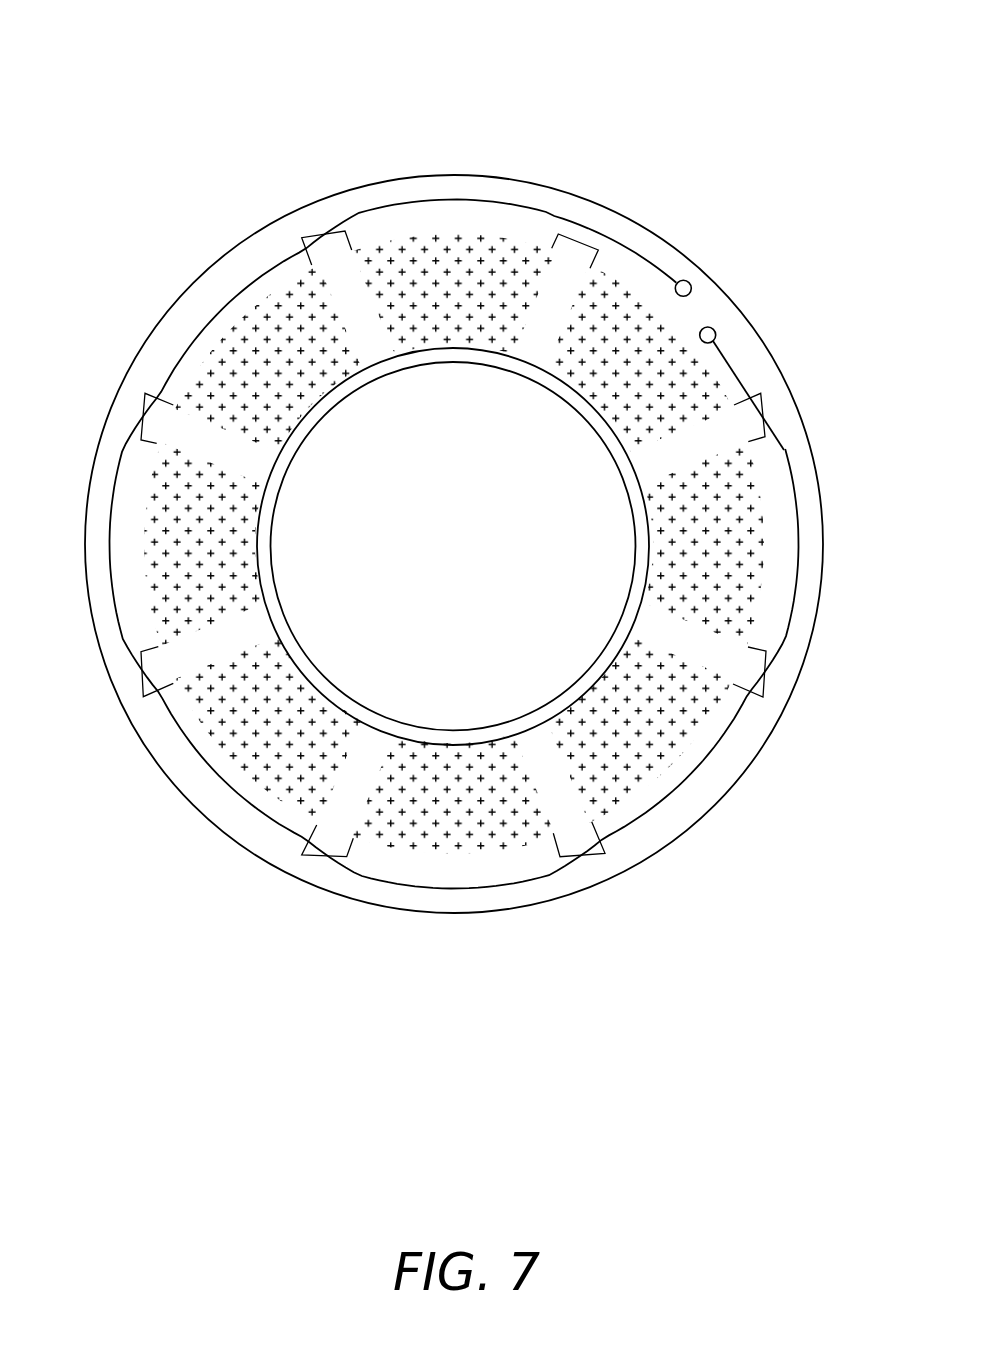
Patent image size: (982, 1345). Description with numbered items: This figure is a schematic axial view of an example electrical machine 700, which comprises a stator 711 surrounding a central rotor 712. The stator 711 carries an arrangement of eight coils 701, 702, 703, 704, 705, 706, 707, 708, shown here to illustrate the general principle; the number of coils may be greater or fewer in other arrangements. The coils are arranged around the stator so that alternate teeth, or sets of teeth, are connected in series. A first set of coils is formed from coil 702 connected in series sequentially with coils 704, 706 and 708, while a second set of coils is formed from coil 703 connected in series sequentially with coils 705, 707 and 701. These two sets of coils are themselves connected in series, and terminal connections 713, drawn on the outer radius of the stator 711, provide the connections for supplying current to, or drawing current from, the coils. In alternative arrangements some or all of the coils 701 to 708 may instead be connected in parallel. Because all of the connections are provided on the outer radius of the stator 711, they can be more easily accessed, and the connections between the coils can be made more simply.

The electrical machine 700 is at (190, 154).
The coil 701 is at (474, 306).
The coil 702 is at (659, 384).
The coil 703 is at (719, 539).
The coil 704 is at (644, 729).
The coil 705 is at (476, 809).
The coil 706 is at (292, 739).
The coil 707 is at (214, 559).
The coil 708 is at (292, 375).
The stator 711 is at (428, 175).
The rotor 712 is at (468, 559).
The terminal connections 713 is at (722, 324).